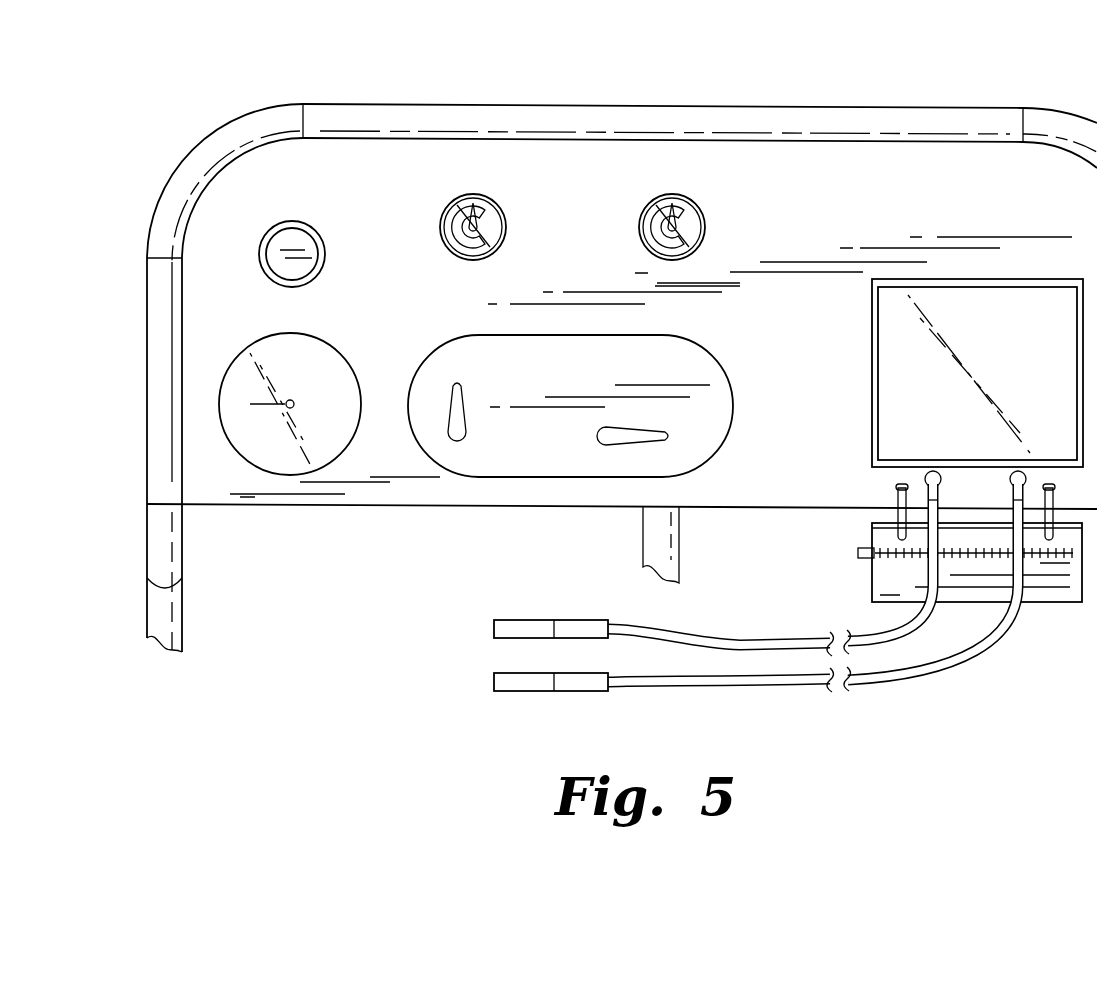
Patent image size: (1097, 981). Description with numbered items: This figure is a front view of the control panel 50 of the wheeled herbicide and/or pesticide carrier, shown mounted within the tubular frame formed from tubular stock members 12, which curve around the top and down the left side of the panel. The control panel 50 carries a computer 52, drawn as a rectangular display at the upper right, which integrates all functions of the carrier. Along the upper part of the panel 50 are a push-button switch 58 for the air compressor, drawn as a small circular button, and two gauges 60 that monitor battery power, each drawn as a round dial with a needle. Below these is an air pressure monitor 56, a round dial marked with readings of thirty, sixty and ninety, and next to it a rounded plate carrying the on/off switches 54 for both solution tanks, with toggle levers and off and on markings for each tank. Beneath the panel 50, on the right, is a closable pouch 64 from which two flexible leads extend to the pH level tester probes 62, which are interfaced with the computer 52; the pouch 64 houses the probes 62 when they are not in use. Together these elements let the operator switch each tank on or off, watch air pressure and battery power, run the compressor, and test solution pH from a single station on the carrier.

The tubular stock members 12 is at (967, 108).
The control panel 50 is at (283, 654).
The computer 52 is at (1025, 345).
The on/off switches 54 is at (500, 477).
The air pressure monitor 56 is at (267, 472).
The push-button switch 58 is at (316, 233).
The gauges 60 is at (506, 222).
The pH level tester probes 62 is at (494, 628).
The closable pouch 64 is at (1040, 603).